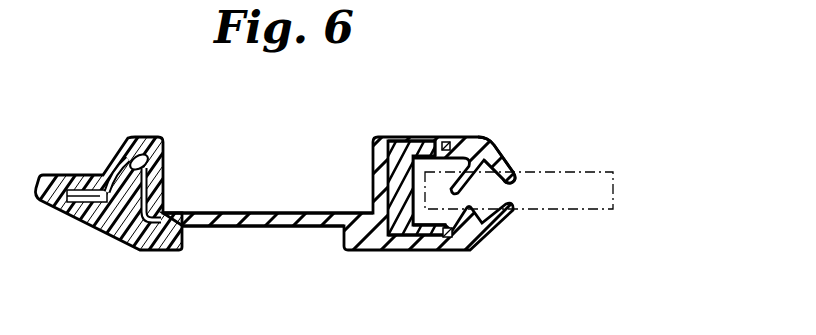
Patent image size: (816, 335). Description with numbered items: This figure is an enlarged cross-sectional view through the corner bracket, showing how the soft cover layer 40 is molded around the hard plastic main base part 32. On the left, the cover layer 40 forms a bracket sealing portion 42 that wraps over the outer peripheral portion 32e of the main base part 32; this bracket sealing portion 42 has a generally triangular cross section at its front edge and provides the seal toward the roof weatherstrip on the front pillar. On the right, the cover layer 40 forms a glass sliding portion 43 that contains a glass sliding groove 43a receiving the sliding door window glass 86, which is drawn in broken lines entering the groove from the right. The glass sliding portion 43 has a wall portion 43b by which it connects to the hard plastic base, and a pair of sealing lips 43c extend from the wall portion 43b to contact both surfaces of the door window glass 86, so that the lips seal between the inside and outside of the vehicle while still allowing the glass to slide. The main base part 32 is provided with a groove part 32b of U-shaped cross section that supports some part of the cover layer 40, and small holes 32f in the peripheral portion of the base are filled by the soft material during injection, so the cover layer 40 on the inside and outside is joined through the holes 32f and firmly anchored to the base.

The main base part 32 is at (228, 217).
The groove part 32b is at (436, 141).
The outer peripheral portion 32e is at (127, 177).
The small holes 32f is at (458, 238).
The cover layer 40 is at (458, 122).
The bracket sealing portion 42 is at (100, 218).
The glass sliding portion 43 is at (480, 138).
The glass sliding groove 43a is at (420, 215).
The wall portion 43b is at (392, 141).
The sealing lips 43c is at (500, 147).
The door window glass 86 is at (561, 212).